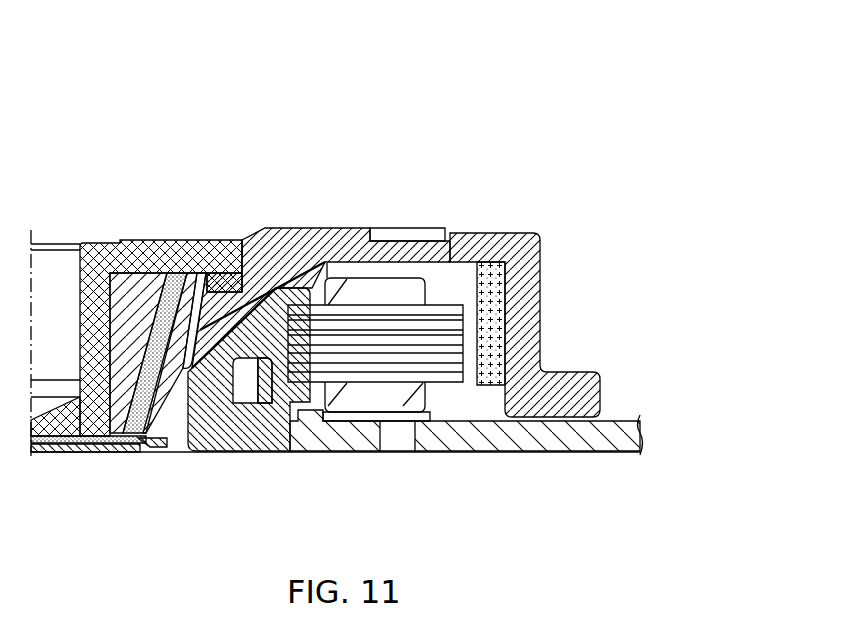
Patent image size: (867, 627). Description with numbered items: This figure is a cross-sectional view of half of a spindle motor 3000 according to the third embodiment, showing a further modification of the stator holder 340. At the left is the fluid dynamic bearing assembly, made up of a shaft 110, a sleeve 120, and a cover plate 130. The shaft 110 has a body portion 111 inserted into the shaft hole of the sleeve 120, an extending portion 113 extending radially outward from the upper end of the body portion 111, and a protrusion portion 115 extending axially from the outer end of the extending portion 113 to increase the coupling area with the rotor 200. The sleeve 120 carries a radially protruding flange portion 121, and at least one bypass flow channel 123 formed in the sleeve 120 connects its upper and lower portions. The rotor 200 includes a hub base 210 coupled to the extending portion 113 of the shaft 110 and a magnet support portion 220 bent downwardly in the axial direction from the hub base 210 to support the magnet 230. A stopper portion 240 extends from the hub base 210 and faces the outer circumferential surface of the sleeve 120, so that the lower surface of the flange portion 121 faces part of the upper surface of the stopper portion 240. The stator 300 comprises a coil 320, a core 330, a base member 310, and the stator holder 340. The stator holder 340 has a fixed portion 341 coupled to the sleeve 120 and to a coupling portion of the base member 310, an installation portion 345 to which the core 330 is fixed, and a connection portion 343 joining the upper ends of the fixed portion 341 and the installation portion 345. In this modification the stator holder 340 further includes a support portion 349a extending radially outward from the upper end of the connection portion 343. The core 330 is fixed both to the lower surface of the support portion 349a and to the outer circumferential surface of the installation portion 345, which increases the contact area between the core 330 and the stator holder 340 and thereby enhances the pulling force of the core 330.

The spindle motor 3000 is at (522, 42).
The shaft 110 is at (272, 80).
The body portion 111 is at (77, 240).
The extending portion 113 is at (148, 240).
The protrusion portion 115 is at (228, 240).
The sleeve 120 is at (108, 445).
The flange portion 121 is at (186, 240).
The bypass flow channel 123 is at (143, 447).
The cover plate 130 is at (55, 452).
The rotor 200 is at (546, 182).
The hub base 210 is at (348, 238).
The magnet support portion 220 is at (540, 253).
The magnet 230 is at (490, 301).
The stopper portion 240 is at (270, 240).
The support portion 349a is at (410, 240).
The stator 300 is at (537, 524).
The base member 310 is at (512, 433).
The coil 320 is at (427, 402).
The core 330 is at (383, 357).
The stator holder 340 is at (342, 521).
The fixed portion 341 is at (222, 430).
The connection portion 343 is at (255, 378).
The installation portion 345 is at (295, 398).